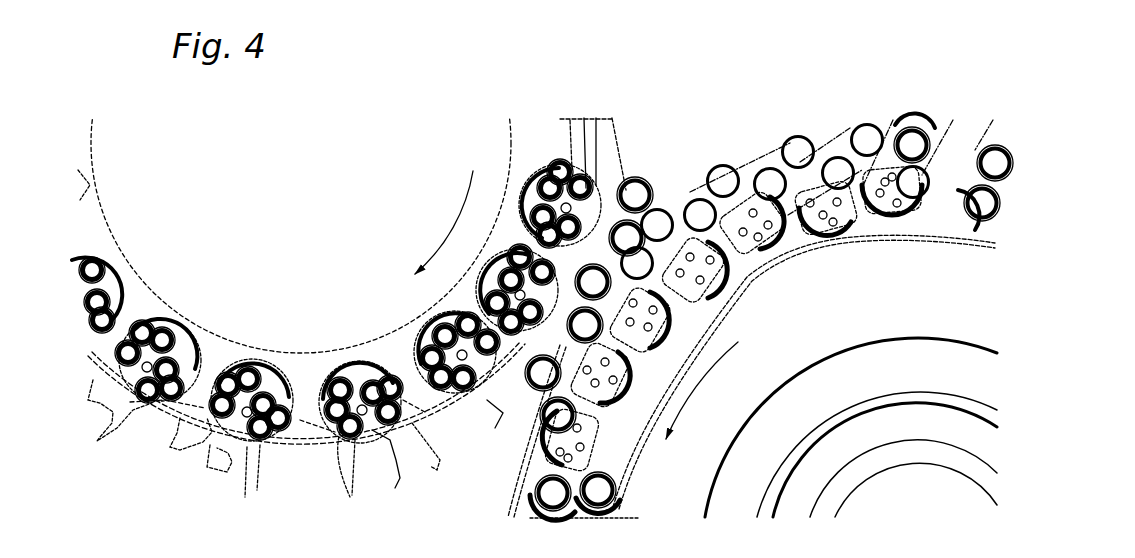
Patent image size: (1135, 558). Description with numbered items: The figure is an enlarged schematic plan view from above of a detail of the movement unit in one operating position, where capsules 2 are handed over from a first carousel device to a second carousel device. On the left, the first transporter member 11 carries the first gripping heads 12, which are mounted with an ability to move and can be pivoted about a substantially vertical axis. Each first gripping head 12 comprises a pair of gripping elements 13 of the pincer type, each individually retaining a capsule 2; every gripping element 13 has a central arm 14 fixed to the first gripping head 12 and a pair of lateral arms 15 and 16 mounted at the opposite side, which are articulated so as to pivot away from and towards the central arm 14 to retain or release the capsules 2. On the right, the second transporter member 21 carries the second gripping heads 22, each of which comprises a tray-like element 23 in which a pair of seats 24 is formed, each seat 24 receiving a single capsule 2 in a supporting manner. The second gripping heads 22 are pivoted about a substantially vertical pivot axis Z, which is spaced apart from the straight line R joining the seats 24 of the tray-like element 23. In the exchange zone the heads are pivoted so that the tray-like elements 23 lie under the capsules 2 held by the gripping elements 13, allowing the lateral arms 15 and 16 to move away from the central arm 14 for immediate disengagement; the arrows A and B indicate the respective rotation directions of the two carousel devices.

The capsule 2 is at (623, 182).
The first transporter member 11 is at (137, 305).
The first gripping head 12 is at (279, 360).
The gripping element 13 is at (226, 382).
The central arm 14 is at (208, 470).
The lateral arm 15 is at (253, 490).
The lateral arm 16 is at (172, 446).
The second transporter member 21 is at (869, 266).
The second gripping head 22 is at (767, 250).
The tray-like element 23 is at (773, 148).
The seat 24 is at (698, 200).
The rotation direction A is at (455, 215).
The rotation direction B is at (695, 385).
The pivot axis Z is at (705, 272).
The straight line R is at (677, 484).